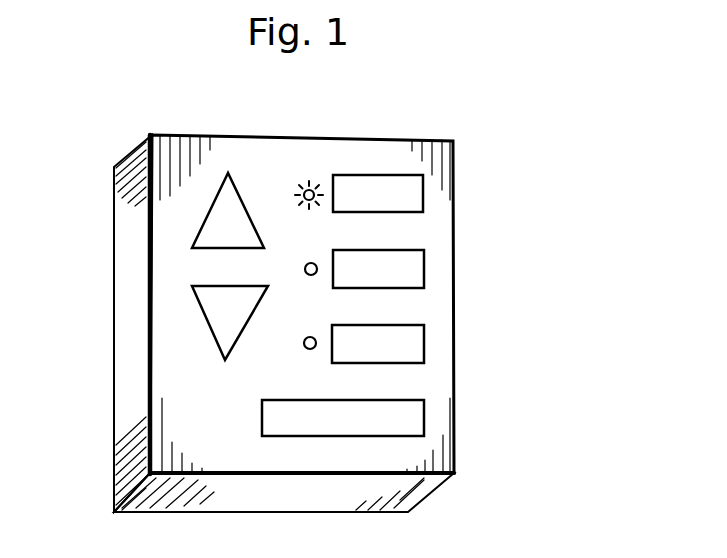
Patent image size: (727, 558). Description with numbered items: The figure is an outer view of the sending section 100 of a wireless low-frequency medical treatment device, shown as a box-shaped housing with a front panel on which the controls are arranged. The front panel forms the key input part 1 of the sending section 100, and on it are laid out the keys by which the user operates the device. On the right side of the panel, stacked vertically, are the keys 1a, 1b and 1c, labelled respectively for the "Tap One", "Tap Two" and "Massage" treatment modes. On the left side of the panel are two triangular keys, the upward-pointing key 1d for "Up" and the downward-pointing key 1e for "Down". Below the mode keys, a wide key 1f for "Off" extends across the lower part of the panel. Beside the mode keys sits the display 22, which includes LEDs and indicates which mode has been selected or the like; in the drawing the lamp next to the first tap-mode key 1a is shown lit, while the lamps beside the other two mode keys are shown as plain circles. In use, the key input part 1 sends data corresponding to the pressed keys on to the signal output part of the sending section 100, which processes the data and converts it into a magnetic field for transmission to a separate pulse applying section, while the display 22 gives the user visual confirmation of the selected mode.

The sending section 100 is at (548, 295).
The key input part 1 is at (468, 126).
The key 1a is at (423, 191).
The key 1b is at (424, 268).
The key 1c is at (430, 347).
The key 1d is at (203, 221).
The key 1e is at (206, 319).
The key 1f is at (428, 418).
The display 22 is at (319, 176).